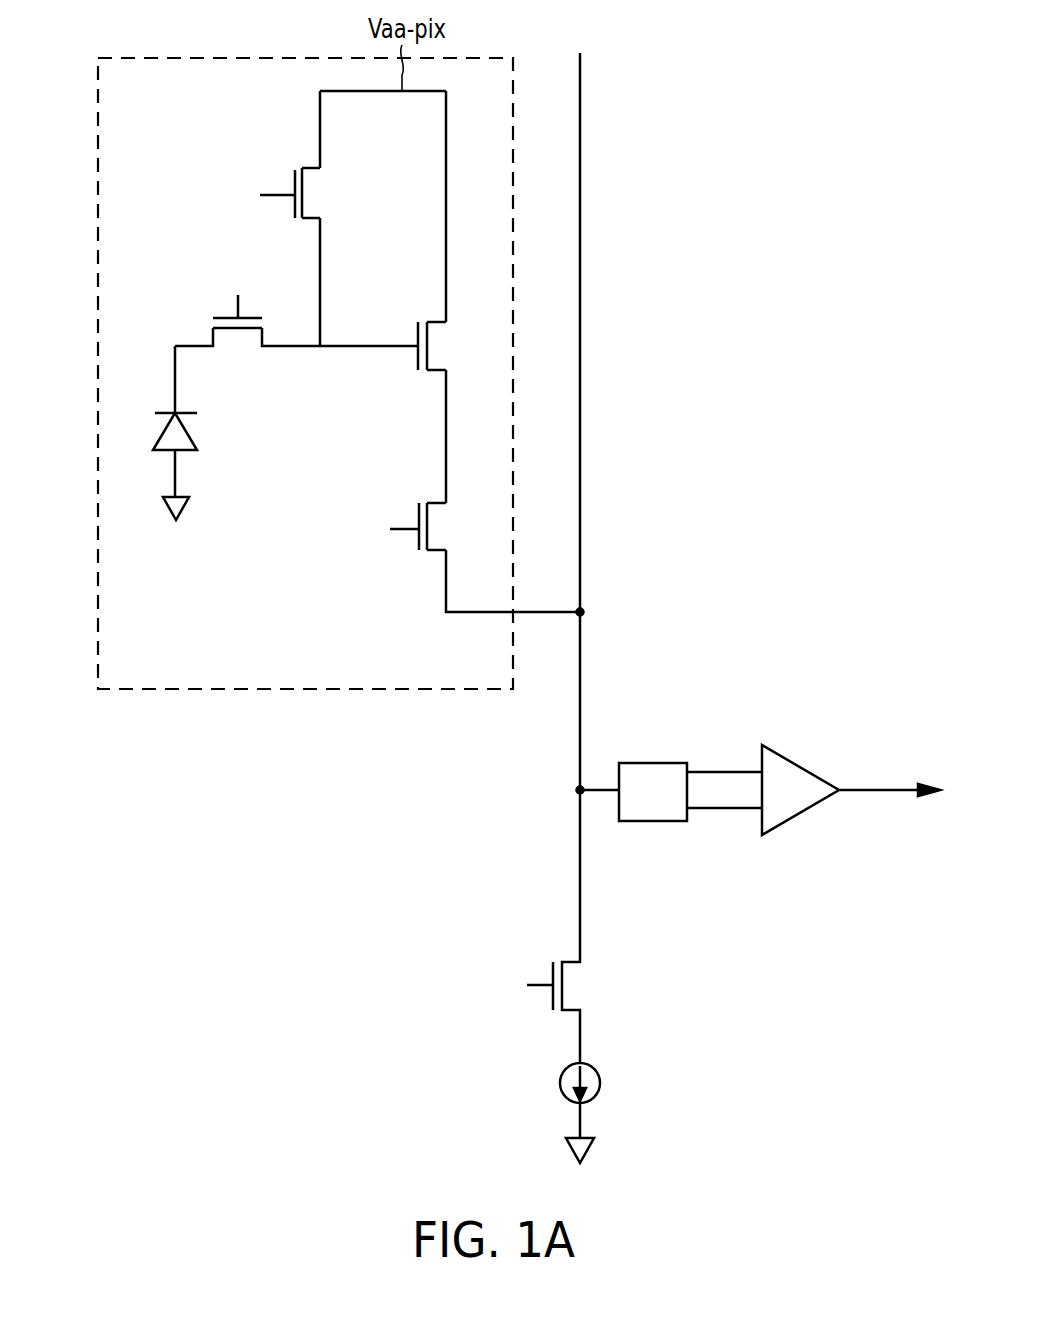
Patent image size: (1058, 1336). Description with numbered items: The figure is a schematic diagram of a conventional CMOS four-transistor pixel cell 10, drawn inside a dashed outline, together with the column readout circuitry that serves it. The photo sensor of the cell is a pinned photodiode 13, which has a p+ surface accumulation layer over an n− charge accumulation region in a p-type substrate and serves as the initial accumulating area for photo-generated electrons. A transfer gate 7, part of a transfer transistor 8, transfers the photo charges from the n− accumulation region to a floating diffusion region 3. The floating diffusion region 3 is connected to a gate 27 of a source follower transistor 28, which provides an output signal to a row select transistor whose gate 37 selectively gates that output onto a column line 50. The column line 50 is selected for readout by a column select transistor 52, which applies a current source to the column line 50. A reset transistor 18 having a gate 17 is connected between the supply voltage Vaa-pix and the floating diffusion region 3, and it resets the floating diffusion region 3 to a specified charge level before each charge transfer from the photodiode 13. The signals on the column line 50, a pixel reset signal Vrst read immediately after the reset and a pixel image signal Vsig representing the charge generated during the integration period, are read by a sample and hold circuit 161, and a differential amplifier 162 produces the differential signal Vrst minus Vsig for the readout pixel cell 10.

The pixel cell 10 is at (97, 548).
The floating diffusion region 3 is at (313, 357).
The transfer gate 7 is at (234, 313).
The transfer transistor 8 is at (242, 346).
The pinned photodiode 13 is at (149, 433).
The gate of the reset transistor 17 is at (291, 203).
The reset transistor 18 is at (321, 196).
The gate of the source follower transistor 27 is at (424, 386).
The source follower transistor 28 is at (436, 337).
The gate of the row select transistor 37 is at (425, 558).
The column line 50 is at (580, 290).
The column select transistor 52 is at (546, 1019).
The sample and hold circuit 161 is at (655, 765).
The differential amplifier 162 is at (803, 772).